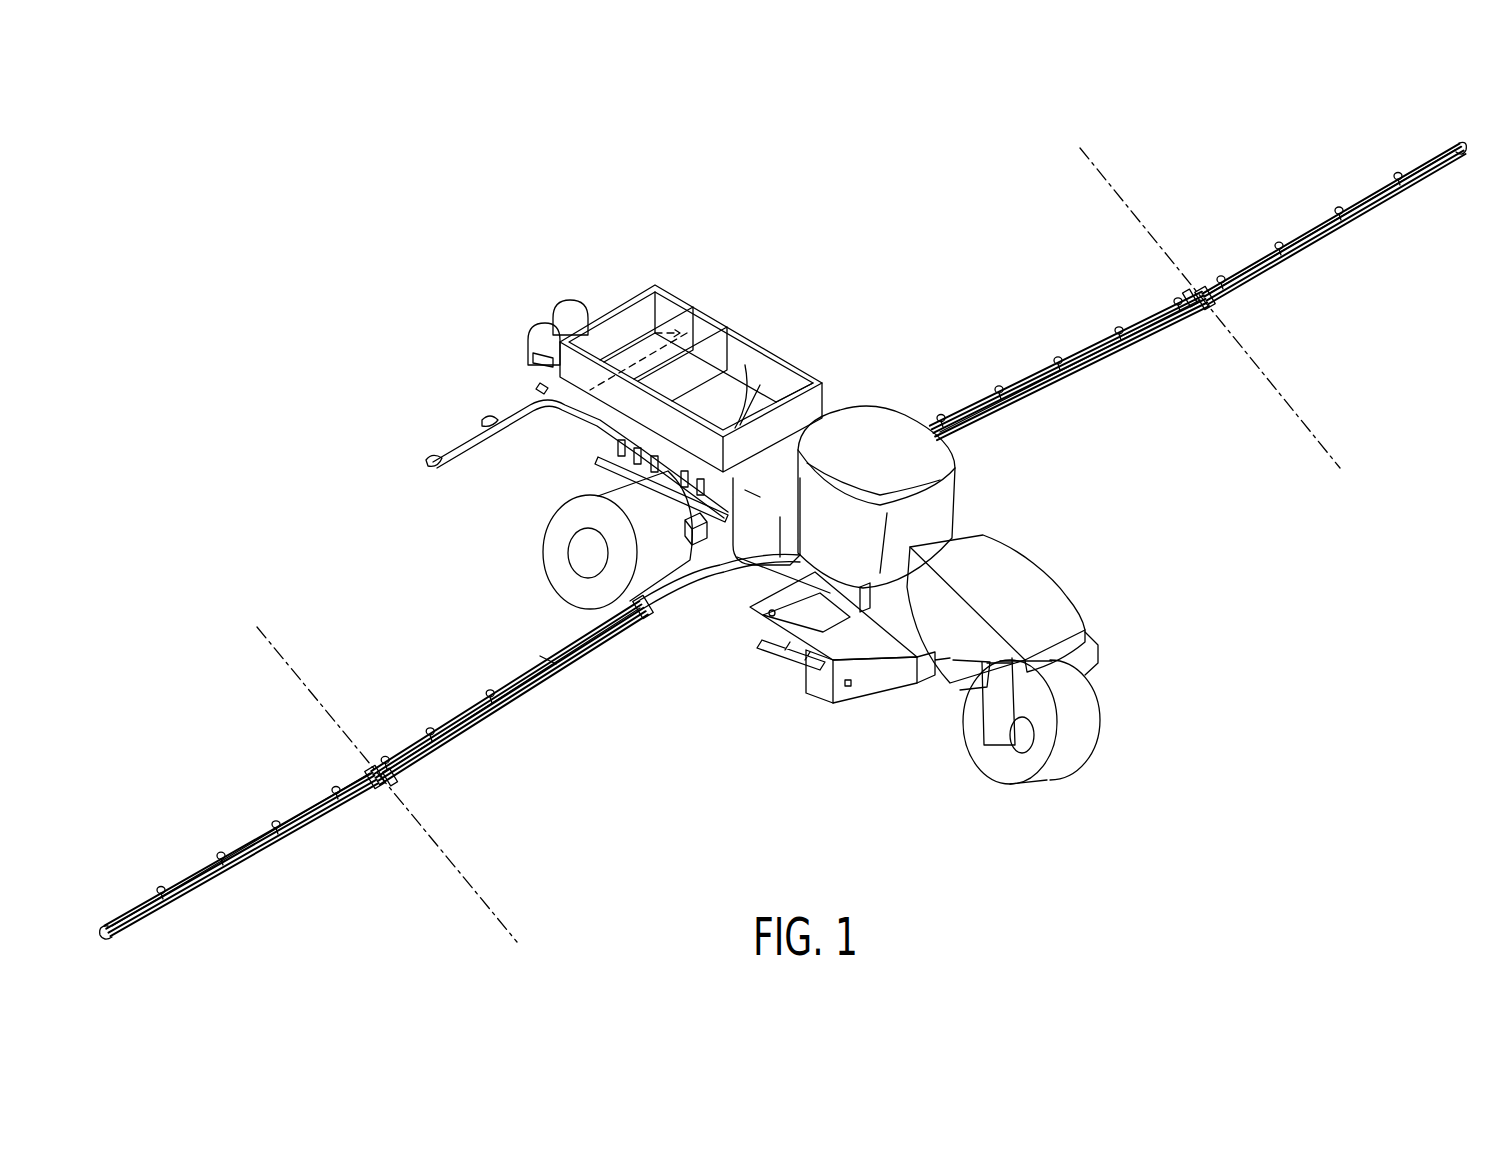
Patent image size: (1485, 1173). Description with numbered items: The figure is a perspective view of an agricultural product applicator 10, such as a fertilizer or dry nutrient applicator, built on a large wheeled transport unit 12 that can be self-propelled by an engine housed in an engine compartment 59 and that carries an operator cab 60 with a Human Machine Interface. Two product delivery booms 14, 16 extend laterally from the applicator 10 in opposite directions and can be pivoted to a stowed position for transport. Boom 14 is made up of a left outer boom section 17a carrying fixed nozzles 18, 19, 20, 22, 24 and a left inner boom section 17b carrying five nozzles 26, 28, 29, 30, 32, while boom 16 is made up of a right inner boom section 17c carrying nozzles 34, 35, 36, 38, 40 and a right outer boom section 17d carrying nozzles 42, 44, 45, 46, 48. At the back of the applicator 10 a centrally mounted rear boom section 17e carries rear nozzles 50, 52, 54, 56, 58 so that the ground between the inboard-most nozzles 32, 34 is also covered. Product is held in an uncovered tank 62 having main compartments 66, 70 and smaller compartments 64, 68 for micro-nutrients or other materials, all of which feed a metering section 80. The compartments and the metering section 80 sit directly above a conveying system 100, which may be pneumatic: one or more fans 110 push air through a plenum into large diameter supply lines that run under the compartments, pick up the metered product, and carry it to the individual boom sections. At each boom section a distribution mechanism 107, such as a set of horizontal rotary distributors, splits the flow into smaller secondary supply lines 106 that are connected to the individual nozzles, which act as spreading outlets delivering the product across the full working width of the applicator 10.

The agricultural product applicator 10 is at (835, 727).
The wheeled transport unit 12 is at (770, 673).
The product delivery boom 14 is at (1027, 370).
The product delivery boom 16 is at (520, 740).
The left outer boom section 17a is at (1365, 338).
The left inner boom section 17b is at (1188, 440).
The right inner boom section 17c is at (598, 793).
The right outer boom section 17d is at (360, 855).
The rear/center boom section 17e is at (390, 423).
The fixed nozzle 18 is at (1456, 150).
The fixed nozzle 19 is at (1398, 176).
The fixed nozzle 20 is at (1339, 210).
The fixed nozzle 22 is at (1279, 245).
The fixed nozzle 24 is at (1221, 279).
The nozzle 26 is at (1178, 300).
The nozzle 28 is at (1119, 330).
The nozzle 29 is at (1058, 360).
The nozzle 30 is at (999, 389).
The nozzle 32 is at (941, 418).
The nozzle 34 is at (580, 627).
The nozzle 35 is at (545, 660).
The nozzle 36 is at (490, 693).
The nozzle 38 is at (430, 731).
The nozzle 40 is at (385, 760).
The nozzle 42 is at (336, 790).
The nozzle 44 is at (276, 824).
The nozzle 45 is at (221, 856).
The nozzle 46 is at (161, 890).
The nozzle 48 is at (105, 935).
The rear nozzle 50 is at (648, 288).
The rear nozzle 52 is at (640, 322).
The rear nozzle 54 is at (543, 387).
The rear nozzle 56 is at (488, 420).
The rear nozzle 58 is at (430, 460).
The engine compartment 59 is at (1020, 580).
The operator cab 60 is at (937, 498).
The uncovered tank 62 is at (770, 340).
The smaller compartment 64 is at (670, 310).
The compartment 66 is at (708, 332).
The smaller compartment 68 is at (753, 342).
The compartment 70 is at (790, 370).
The metering section 80 is at (587, 454).
The conveying system 100 is at (758, 272).
The secondary supply line 106 is at (1315, 243).
The distribution mechanism 107 is at (1203, 312).
The fan 110 is at (535, 332).